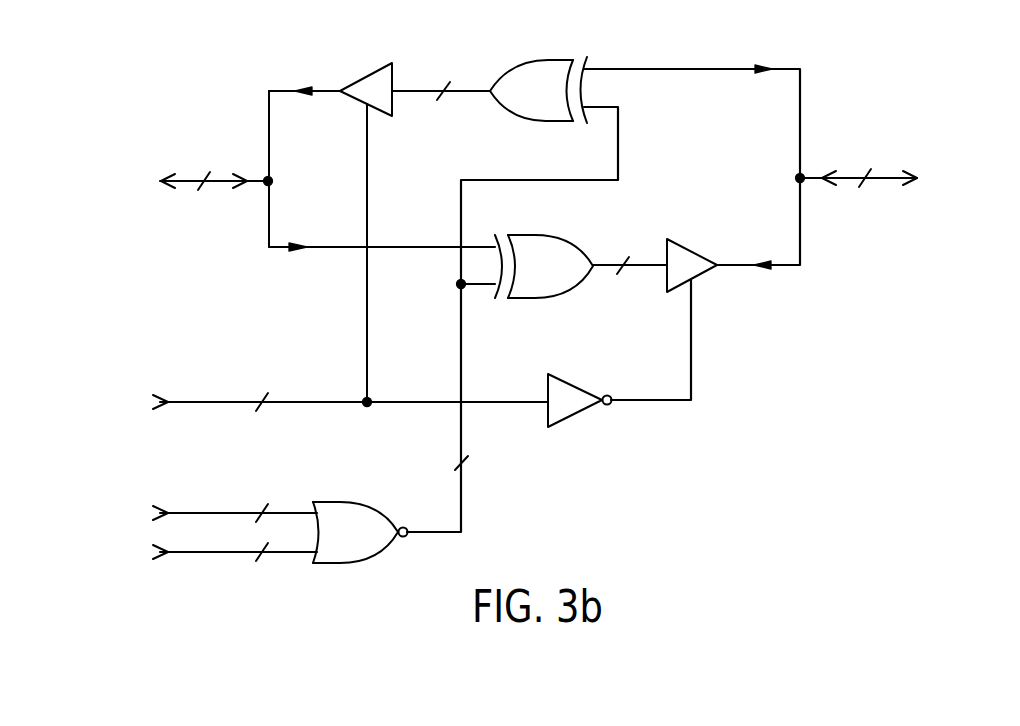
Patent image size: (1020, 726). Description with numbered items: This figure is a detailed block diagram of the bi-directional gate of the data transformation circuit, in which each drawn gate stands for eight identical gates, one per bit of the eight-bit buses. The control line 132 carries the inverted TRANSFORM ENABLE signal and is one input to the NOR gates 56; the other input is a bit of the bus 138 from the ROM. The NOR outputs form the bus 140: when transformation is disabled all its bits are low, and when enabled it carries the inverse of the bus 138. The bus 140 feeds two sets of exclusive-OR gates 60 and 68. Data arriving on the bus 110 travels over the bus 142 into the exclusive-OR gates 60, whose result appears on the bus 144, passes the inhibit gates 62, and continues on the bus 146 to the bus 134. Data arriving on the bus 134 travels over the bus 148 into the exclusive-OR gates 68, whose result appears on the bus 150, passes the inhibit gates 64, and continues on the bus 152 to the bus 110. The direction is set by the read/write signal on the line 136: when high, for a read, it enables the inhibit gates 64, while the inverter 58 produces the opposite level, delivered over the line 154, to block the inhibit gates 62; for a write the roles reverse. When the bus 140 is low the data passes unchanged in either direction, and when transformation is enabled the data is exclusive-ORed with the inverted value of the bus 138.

The bus 110 is at (185, 178).
The line 132 is at (185, 507).
The bus 134 is at (855, 175).
The line 136 is at (183, 400).
The bus 138 is at (185, 547).
The bus 140 is at (466, 522).
The bus 142 is at (332, 250).
The bus 144 is at (604, 262).
The bus 146 is at (791, 267).
The bus 148 is at (631, 66).
The bus 150 is at (412, 88).
The bus 152 is at (284, 88).
The enable line from inverter 58 154 is at (694, 382).
The NOR gates 56 is at (360, 532).
The inverter 58 is at (580, 400).
The exclusive-OR gates 60 is at (544, 266).
The inhibit gates 62 is at (692, 265).
The inhibit gates 64 is at (366, 232).
The exclusive-OR gates 68 is at (538, 90).